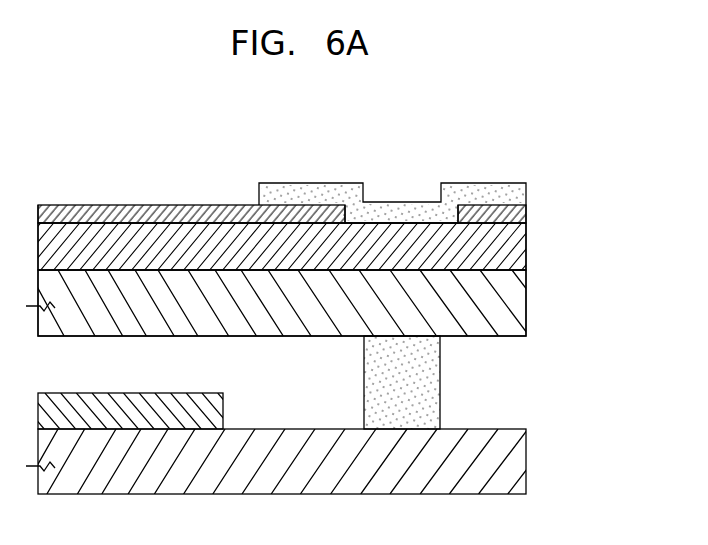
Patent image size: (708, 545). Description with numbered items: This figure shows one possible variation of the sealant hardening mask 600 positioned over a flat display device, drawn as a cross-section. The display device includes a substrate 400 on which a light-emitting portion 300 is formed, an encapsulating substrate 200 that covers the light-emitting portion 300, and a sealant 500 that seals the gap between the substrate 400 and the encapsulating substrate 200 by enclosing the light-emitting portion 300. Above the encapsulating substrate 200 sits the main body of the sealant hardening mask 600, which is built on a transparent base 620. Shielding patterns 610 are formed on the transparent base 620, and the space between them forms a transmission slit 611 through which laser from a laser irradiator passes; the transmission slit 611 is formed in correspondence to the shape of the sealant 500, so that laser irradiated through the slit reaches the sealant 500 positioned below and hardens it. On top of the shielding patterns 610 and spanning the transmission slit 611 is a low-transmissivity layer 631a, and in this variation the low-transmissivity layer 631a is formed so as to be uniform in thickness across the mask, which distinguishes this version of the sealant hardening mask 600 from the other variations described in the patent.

The encapsulating substrate 200 is at (518, 300).
The light-emitting portion 300 is at (127, 405).
The substrate 400 is at (522, 455).
The sealant 500 is at (432, 381).
The sealant hardening mask 600 is at (328, 234).
The shielding patterns 610 is at (518, 212).
The transmission slit 611 is at (401, 212).
The transparent base 620 is at (517, 250).
The low-transmissivity layer 631a is at (484, 191).